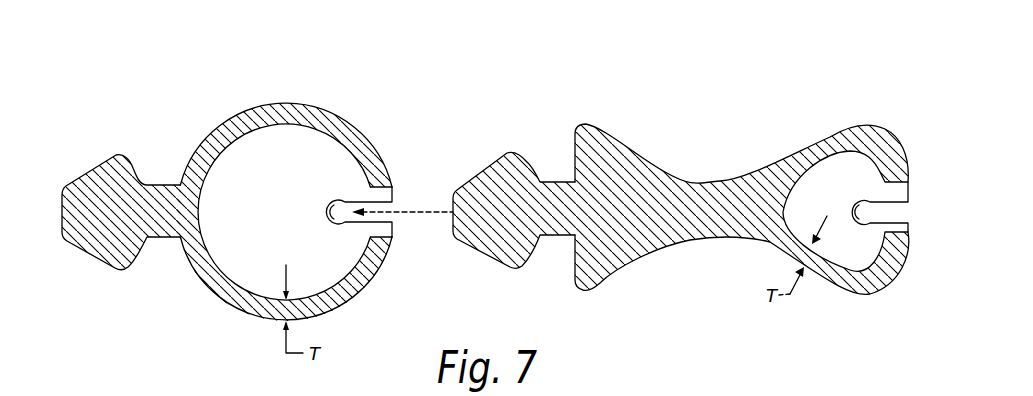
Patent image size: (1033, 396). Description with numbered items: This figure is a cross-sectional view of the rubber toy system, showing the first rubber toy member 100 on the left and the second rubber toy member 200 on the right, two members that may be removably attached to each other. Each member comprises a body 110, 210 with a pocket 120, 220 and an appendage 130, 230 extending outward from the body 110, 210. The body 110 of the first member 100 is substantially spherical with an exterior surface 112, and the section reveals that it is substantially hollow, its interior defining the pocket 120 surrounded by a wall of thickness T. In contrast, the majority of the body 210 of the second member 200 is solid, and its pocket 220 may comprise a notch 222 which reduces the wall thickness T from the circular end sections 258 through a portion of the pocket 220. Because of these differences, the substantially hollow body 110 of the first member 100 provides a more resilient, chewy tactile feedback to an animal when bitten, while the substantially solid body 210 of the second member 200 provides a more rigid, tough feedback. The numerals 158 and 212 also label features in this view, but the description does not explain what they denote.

The first rubber toy member 100 is at (260, 195).
The body 110 is at (243, 311).
The exterior surface 112 is at (386, 156).
The pocket 120 is at (273, 147).
The appendage 130 is at (105, 153).
The slot opening 158 is at (340, 226).
The second rubber toy member 200 is at (681, 196).
The body 210 is at (722, 238).
The lower arm 212 is at (836, 281).
The pocket 220 is at (808, 192).
The notch 222 is at (866, 286).
The appendage 230 is at (493, 154).
The circular end sections 258 is at (848, 218).